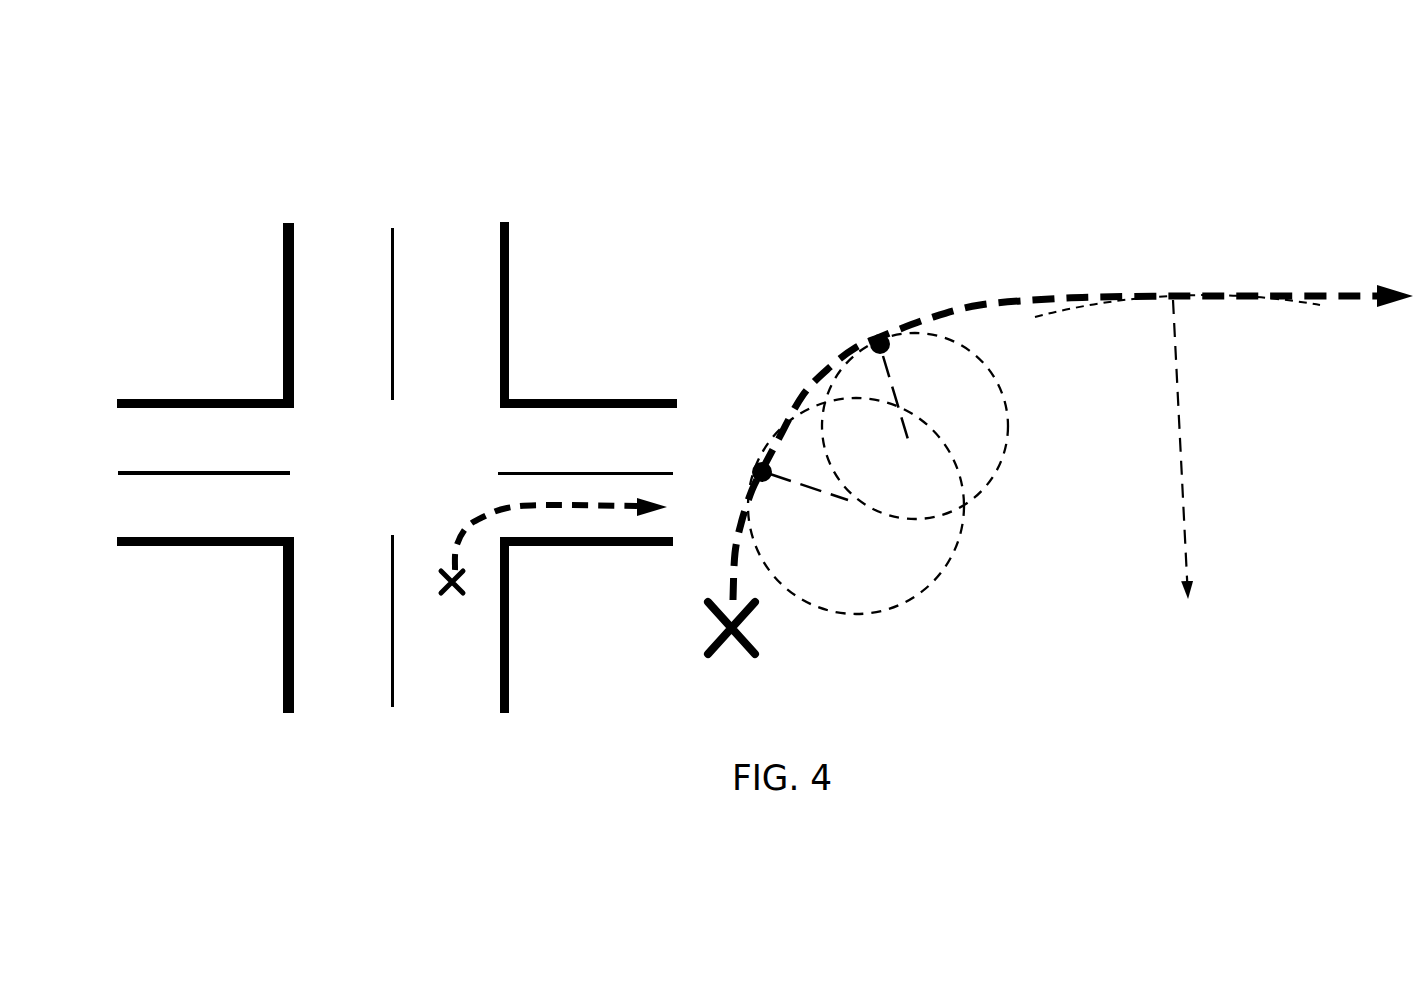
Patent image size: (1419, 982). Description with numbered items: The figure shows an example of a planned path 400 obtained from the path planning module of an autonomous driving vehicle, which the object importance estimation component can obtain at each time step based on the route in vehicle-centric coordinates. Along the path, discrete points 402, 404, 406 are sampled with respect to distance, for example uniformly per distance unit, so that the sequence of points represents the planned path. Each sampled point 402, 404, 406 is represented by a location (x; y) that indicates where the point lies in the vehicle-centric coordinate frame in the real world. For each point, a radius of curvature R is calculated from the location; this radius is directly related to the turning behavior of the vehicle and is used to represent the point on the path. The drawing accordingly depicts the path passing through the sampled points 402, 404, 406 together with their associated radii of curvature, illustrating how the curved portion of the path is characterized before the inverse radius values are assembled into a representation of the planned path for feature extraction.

The intersection driving scenario 400 is at (337, 128).
The sampled point 402 is at (753, 470).
The sampled point 404 is at (875, 338).
The sampled point 406 is at (1170, 290).